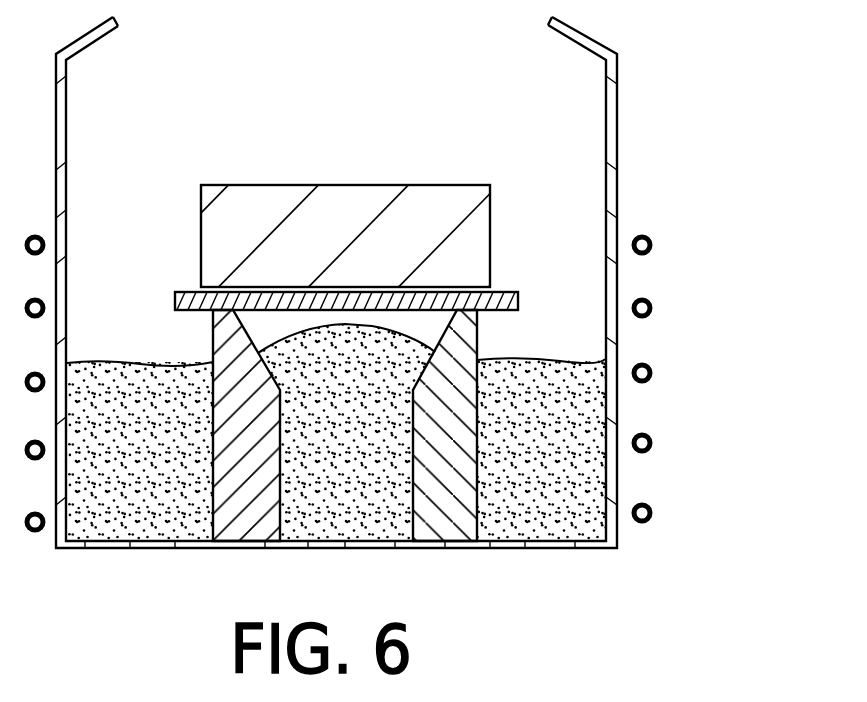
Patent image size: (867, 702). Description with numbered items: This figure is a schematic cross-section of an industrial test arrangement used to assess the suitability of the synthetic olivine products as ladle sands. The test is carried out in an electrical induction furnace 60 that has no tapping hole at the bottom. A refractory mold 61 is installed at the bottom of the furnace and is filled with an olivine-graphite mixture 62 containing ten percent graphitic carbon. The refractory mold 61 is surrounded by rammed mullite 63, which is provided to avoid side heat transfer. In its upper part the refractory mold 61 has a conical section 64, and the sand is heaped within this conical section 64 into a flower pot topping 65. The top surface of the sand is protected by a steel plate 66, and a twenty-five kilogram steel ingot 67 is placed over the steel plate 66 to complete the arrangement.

The electrical induction furnace 60 is at (617, 93).
The refractory mold 61 is at (213, 340).
The olivine-graphite mixture 62 is at (343, 493).
The rammed mullite 63 is at (568, 422).
The conical section 64 is at (438, 352).
The flower pot topping 65 is at (287, 333).
The steel plate 66 is at (518, 300).
The steel ingot 67 is at (362, 213).